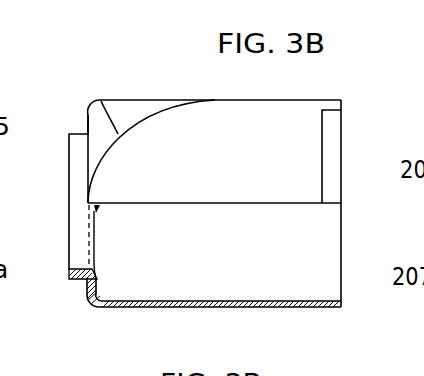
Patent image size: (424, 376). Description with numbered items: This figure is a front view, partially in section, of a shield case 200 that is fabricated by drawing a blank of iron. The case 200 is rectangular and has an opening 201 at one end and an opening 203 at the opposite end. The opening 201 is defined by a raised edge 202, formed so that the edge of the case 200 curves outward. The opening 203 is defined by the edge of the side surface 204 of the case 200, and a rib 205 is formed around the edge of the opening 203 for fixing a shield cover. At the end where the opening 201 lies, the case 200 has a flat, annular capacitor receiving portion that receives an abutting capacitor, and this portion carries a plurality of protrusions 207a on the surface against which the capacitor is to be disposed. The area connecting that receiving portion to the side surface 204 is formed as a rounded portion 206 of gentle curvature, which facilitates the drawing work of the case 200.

The shield case 200 is at (152, 90).
The opening 201 is at (84, 232).
The raised edge 202 is at (86, 279).
The opening 203 is at (326, 256).
The side surface 204 is at (326, 307).
The rib 205 is at (332, 137).
The rounded portion 206 is at (99, 101).
The protrusions 207a is at (99, 210).